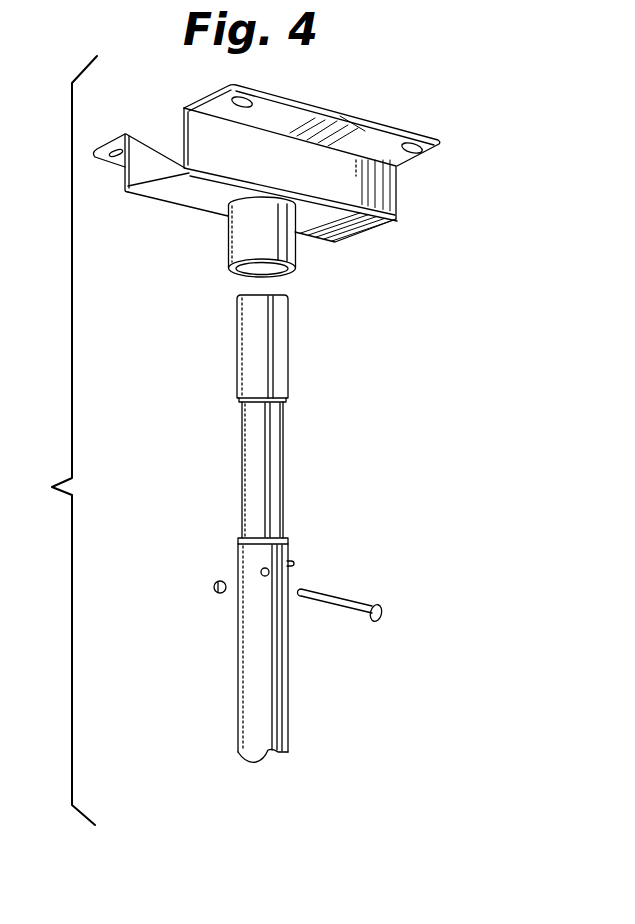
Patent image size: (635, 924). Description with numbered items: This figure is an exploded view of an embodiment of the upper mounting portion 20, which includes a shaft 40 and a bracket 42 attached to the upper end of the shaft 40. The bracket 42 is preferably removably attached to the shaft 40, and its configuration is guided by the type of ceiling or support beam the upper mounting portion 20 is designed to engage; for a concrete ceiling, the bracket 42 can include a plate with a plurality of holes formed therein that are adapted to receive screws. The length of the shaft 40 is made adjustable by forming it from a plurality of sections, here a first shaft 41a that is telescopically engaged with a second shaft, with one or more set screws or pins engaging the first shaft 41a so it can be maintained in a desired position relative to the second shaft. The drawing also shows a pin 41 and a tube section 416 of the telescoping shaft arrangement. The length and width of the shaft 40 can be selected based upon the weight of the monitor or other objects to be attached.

The upper mounting portion 20 is at (55, 440).
The bracket 42 is at (360, 183).
The shaft 40 is at (313, 343).
The first shaft 41a is at (278, 460).
The locking pin 41 is at (328, 597).
The outer tube 416 is at (247, 657).